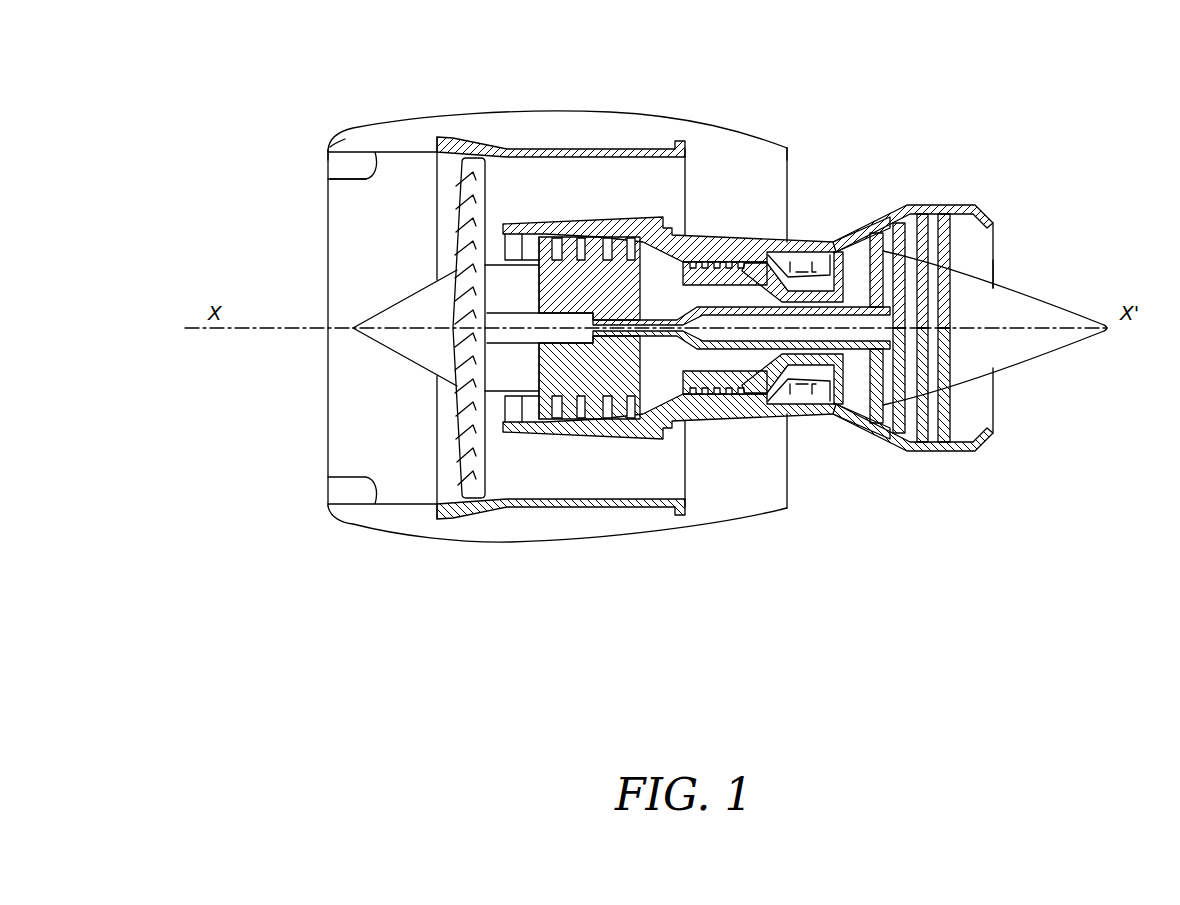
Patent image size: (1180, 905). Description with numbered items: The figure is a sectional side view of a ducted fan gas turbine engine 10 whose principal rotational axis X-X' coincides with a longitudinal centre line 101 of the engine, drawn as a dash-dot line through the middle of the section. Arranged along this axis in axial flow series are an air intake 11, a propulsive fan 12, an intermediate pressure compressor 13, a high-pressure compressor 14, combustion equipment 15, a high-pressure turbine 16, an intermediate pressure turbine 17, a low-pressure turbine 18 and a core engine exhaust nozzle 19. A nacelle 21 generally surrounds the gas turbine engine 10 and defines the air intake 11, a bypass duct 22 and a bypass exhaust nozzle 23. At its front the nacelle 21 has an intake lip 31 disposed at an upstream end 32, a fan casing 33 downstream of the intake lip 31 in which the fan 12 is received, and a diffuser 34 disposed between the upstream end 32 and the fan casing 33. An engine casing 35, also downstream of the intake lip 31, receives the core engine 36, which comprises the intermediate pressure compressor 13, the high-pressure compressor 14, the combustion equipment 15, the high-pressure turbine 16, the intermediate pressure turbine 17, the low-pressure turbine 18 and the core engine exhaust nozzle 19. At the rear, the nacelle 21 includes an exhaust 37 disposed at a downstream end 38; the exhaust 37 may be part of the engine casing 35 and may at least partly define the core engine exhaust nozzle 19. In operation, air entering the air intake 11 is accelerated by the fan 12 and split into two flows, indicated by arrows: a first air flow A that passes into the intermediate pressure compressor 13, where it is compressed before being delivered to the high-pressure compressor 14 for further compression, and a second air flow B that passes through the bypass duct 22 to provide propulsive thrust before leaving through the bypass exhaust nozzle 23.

The ducted fan gas turbine engine 10 is at (507, 288).
The air intake 11 is at (327, 180).
The propulsive fan 12 is at (457, 442).
The intermediate pressure compressor 13 is at (587, 440).
The high-pressure compressor 14 is at (717, 243).
The combustion equipment 15 is at (778, 400).
The high-pressure turbine 16 is at (833, 418).
The intermediate pressure turbine 17 is at (870, 230).
The low-pressure turbine 18 is at (897, 446).
The core engine exhaust nozzle 19 is at (980, 220).
The nacelle 21 is at (555, 130).
The bypass duct 22 is at (768, 196).
The bypass exhaust nozzle 23 is at (787, 148).
The intake lip 31 is at (313, 148).
The upstream end 32 is at (313, 139).
The fan casing 33 is at (473, 137).
The diffuser 34 is at (396, 243).
The engine casing 35 is at (628, 217).
The core engine 36 is at (500, 230).
The exhaust 37 is at (993, 243).
The downstream end 38 is at (970, 326).
The longitudinal centre line 101 is at (280, 330).
The first air flow A is at (499, 258).
The second air flow B is at (499, 196).